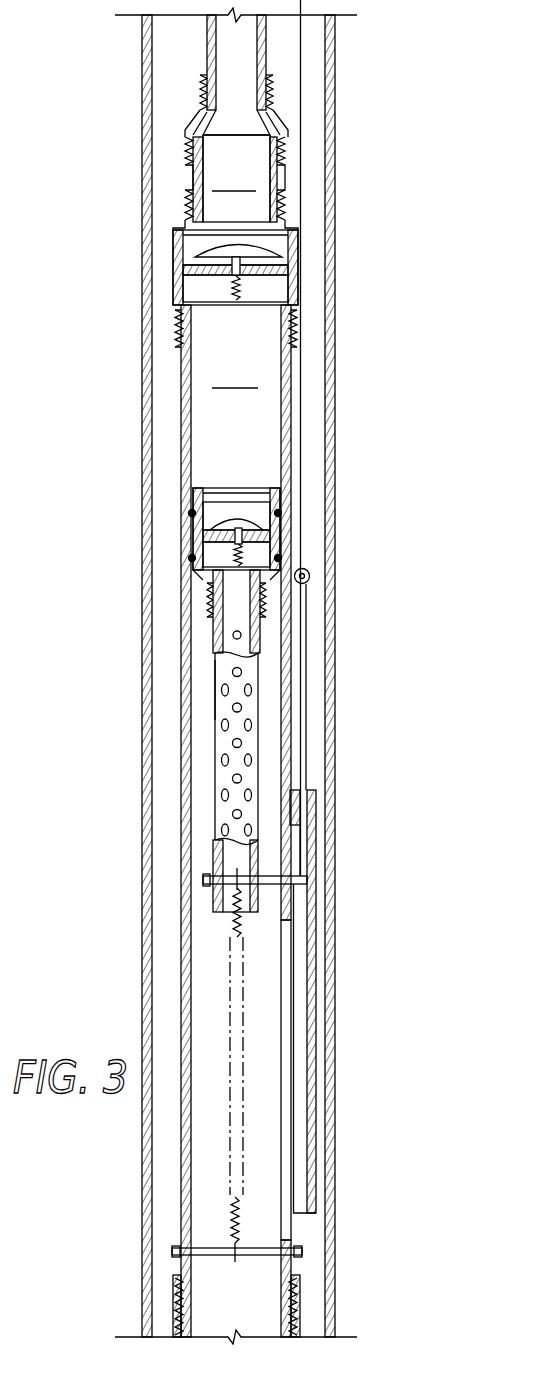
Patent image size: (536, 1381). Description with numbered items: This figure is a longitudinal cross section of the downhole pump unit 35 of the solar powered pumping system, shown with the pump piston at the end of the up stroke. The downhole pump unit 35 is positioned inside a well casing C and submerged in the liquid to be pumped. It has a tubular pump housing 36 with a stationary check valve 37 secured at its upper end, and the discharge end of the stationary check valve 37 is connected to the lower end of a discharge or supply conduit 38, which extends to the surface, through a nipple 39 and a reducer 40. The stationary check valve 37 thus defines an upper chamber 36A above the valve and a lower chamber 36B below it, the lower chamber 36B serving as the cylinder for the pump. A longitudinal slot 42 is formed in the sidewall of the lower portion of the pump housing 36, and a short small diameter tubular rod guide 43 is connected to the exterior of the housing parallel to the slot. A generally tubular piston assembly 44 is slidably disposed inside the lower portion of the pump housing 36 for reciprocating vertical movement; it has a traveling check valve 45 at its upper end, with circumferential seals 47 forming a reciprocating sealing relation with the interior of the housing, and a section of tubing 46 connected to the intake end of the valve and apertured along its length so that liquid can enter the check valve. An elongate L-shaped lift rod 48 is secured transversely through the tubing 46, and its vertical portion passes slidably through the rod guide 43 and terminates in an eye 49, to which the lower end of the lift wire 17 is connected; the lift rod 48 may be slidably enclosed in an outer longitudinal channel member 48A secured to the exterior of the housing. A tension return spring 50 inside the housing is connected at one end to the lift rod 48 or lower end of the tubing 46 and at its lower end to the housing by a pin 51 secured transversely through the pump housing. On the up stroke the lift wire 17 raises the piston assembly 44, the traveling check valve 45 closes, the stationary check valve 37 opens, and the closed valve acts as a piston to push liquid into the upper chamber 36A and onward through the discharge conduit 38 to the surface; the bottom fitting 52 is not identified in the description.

The well casing C is at (141, 799).
The lift wire 17 is at (301, 505).
The downhole pump unit 35 is at (178, 419).
The tubular pump housing 36 is at (291, 458).
The upper chamber 36A is at (236, 178).
The lower chamber 36B is at (235, 375).
The stationary check valve 37 is at (296, 296).
The discharge or supply conduit 38 is at (265, 32).
The nipple 39 is at (278, 182).
The reducer 40 is at (285, 125).
The longitudinal slot 42 is at (288, 970).
The tubular rod guide 43 is at (300, 812).
The piston assembly 44 is at (206, 729).
The traveling check valve 45 is at (281, 530).
The tubing 46 is at (213, 690).
The circumferential seals 47 is at (192, 557).
The lift rod 48 is at (307, 702).
The outer longitudinal channel member 48A is at (316, 915).
The eye 49 is at (310, 576).
The tension return spring 50 is at (243, 1048).
The pin 51 is at (281, 1240).
The bottom fitting 52 is at (300, 1297).